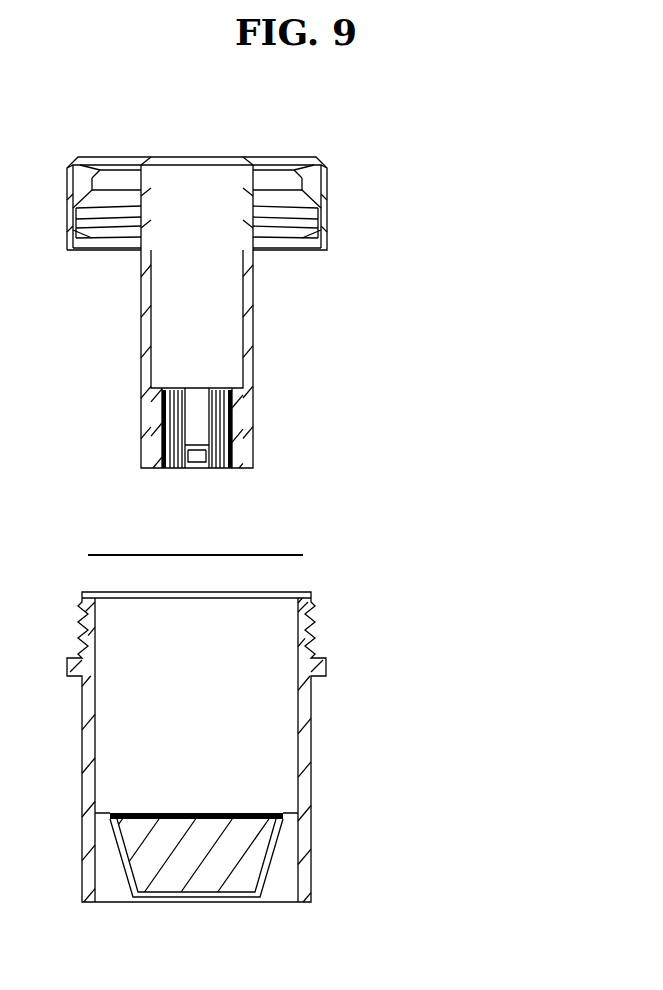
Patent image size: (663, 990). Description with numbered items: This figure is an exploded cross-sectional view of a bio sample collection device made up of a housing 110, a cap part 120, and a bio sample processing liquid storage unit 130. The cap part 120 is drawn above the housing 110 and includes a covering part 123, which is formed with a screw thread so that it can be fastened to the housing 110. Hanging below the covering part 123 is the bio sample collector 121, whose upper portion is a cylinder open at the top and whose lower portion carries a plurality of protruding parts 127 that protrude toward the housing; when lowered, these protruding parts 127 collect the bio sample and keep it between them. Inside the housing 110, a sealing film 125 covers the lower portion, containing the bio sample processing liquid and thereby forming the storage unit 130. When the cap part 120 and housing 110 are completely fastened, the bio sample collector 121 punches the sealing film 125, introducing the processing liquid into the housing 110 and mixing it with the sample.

The cap part 120 is at (298, 312).
The covering part 123 is at (327, 200).
The bio sample collector 121 is at (310, 407).
The protruding parts 127 is at (253, 412).
The housing 110 is at (311, 713).
The sealing film 125 is at (188, 813).
The bio sample processing liquid storage unit 130 is at (200, 843).